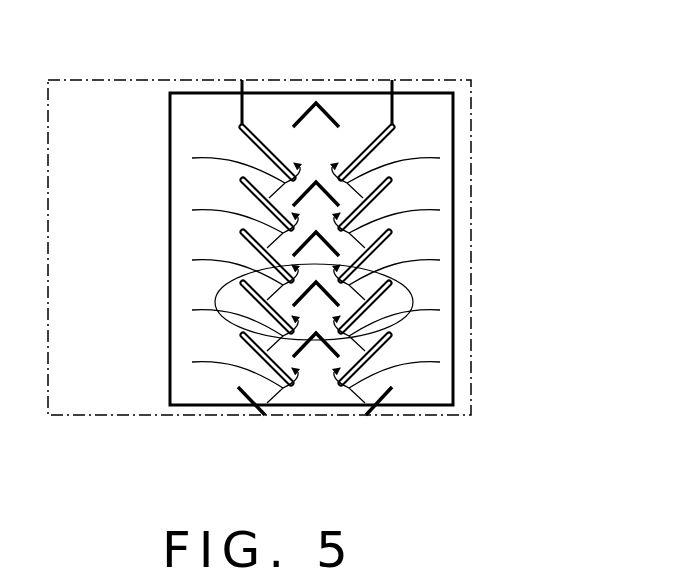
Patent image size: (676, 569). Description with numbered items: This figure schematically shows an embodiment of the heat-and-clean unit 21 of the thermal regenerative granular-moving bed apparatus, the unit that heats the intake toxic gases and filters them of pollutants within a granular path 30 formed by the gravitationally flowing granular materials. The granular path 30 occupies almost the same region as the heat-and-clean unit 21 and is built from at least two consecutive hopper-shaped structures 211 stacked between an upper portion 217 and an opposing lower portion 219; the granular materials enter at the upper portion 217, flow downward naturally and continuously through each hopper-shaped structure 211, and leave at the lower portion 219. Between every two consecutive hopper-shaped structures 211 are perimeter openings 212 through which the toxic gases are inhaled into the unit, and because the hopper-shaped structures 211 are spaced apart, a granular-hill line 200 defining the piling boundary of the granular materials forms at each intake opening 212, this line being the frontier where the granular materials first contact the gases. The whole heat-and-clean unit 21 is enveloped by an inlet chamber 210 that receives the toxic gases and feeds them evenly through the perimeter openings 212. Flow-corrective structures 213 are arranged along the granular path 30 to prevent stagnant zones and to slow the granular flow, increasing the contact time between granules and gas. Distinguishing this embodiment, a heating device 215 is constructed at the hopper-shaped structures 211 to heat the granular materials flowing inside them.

The heat-and-clean unit 21 is at (103, 117).
The granular path 30 is at (330, 154).
The granular-hill line 200 is at (348, 170).
The inlet chamber 210 is at (177, 343).
The hopper-shaped structures 211 is at (215, 296).
The perimeter openings 212 is at (238, 245).
The flow-corrective structures 213 is at (395, 274).
The heating device 215 is at (243, 140).
The upper portion 217 is at (312, 87).
The lower portion 219 is at (322, 412).